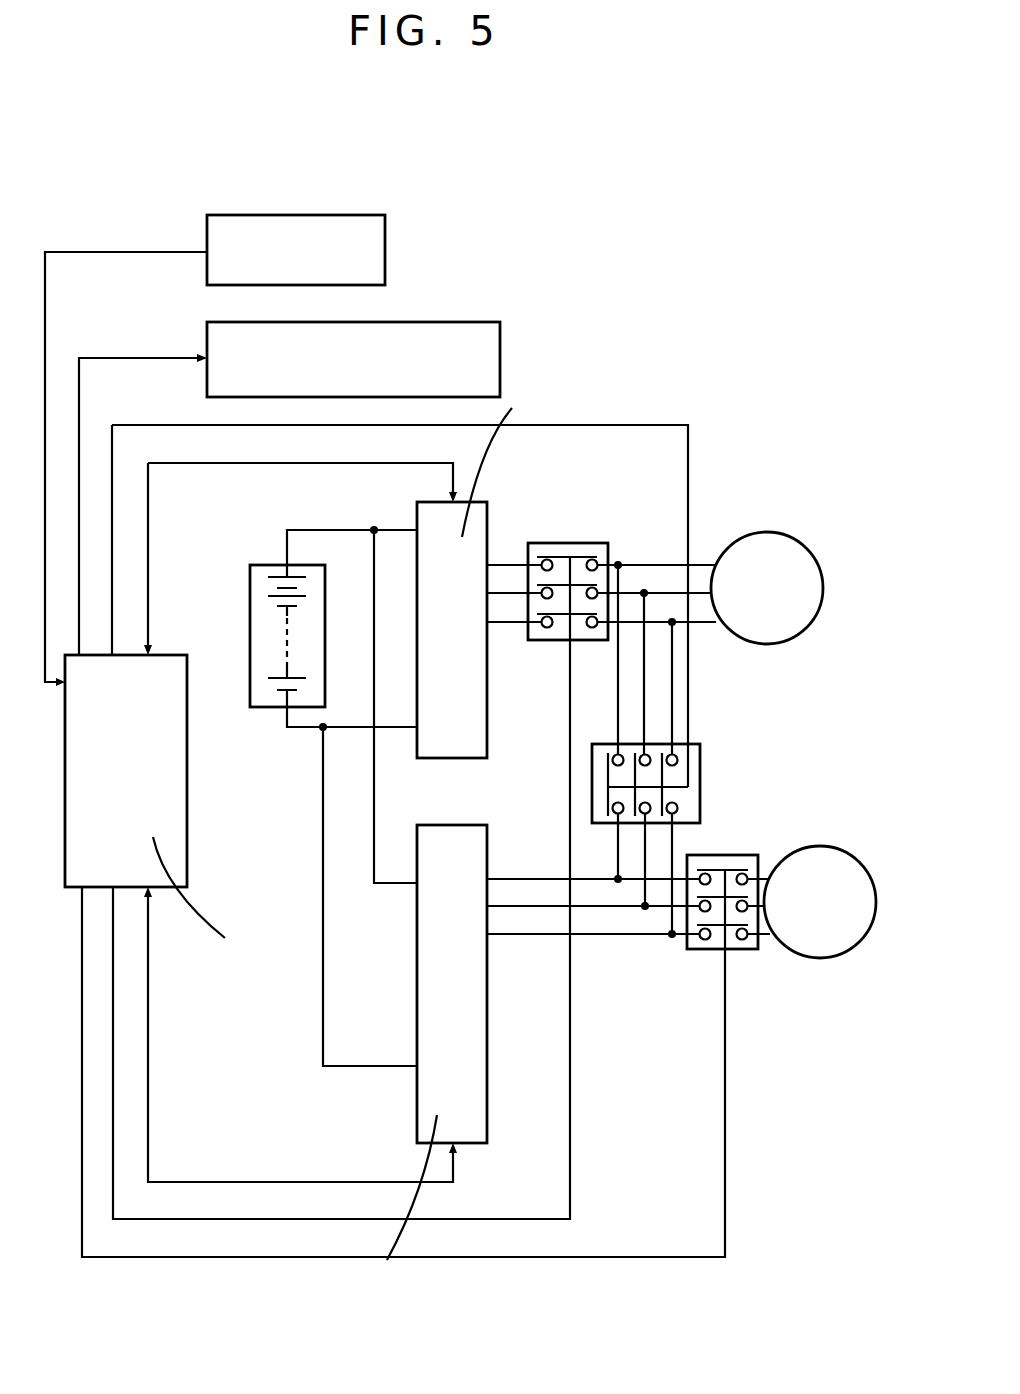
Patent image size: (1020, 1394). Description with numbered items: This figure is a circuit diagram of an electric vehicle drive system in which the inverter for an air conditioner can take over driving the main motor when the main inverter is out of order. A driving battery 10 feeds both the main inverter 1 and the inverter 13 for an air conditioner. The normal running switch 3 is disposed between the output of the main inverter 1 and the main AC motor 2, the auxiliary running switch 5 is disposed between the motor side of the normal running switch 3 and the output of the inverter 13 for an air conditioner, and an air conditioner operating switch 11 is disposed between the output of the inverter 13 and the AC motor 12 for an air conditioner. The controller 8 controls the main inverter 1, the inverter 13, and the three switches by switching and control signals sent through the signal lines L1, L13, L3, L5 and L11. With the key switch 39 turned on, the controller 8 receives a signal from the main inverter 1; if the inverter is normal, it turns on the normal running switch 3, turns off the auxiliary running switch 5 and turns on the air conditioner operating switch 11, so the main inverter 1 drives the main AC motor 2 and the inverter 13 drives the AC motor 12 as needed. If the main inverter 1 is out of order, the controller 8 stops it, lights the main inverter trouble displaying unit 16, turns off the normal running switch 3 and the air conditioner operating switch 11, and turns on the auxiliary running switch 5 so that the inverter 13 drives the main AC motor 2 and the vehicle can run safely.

The main inverter 1 is at (487, 505).
The main AC motor 2 is at (780, 533).
The normal running switch 3 is at (582, 543).
The auxiliary running switch 5 is at (700, 757).
The controller 8 is at (187, 848).
The driving battery 10 is at (250, 588).
The air conditioner operating switch 11 is at (718, 855).
The AC motor for air conditioner 12 is at (795, 958).
The inverter for air conditioner 13 is at (487, 1068).
The main inverter trouble displaying unit 16 is at (500, 333).
The key switch 39 is at (385, 232).
The signal line L1 is at (299, 464).
The signal line L3 is at (570, 1150).
The signal line L5 is at (688, 437).
The signal line L11 is at (725, 1215).
The signal line L13 is at (342, 1182).